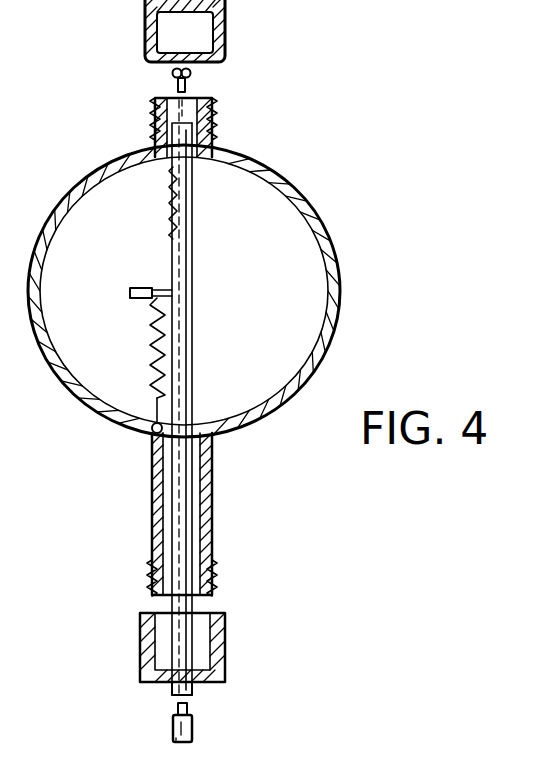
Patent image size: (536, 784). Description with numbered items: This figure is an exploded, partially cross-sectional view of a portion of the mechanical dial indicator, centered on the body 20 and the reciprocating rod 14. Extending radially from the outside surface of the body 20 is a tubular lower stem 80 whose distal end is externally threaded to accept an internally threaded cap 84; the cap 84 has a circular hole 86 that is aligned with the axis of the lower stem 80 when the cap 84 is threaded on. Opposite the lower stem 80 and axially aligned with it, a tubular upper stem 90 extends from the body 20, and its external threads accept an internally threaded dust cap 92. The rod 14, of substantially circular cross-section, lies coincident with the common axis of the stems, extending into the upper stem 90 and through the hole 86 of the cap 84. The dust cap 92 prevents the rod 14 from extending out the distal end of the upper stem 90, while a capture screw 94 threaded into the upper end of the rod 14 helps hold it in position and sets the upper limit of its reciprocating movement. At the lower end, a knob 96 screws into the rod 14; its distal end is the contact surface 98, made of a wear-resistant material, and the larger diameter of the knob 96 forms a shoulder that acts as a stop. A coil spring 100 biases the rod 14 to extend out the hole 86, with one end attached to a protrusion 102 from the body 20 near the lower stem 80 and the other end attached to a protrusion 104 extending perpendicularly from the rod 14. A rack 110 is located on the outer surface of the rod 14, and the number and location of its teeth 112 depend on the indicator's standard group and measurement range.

The reciprocating rod 14 is at (190, 340).
The body 20 is at (340, 240).
The lower stem 80 is at (212, 484).
The cap 84 is at (226, 634).
The circular hole 86 is at (172, 690).
The upper stem 90 is at (214, 117).
The dust cap 92 is at (226, 31).
The capture screw 94 is at (195, 80).
The knob 96 is at (196, 729).
The contact surface 98 is at (173, 742).
The coil spring 100 is at (150, 333).
The protrusion 102 is at (152, 426).
The protrusion 104 is at (130, 293).
The rack 110 is at (167, 209).
The teeth 112 is at (171, 236).